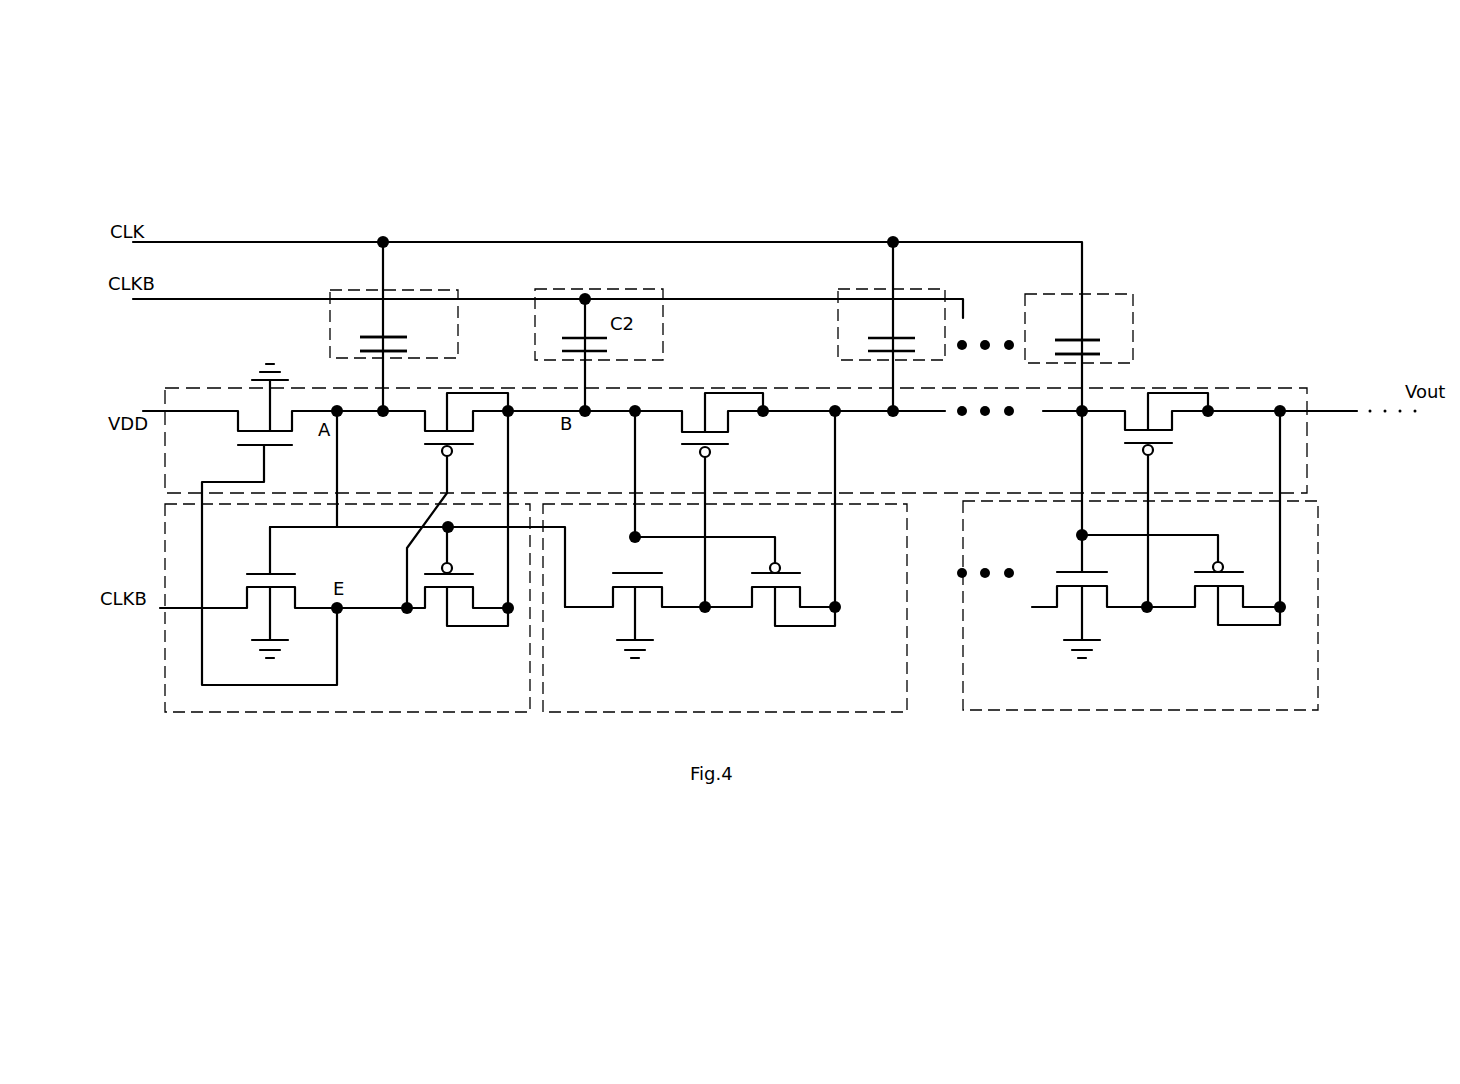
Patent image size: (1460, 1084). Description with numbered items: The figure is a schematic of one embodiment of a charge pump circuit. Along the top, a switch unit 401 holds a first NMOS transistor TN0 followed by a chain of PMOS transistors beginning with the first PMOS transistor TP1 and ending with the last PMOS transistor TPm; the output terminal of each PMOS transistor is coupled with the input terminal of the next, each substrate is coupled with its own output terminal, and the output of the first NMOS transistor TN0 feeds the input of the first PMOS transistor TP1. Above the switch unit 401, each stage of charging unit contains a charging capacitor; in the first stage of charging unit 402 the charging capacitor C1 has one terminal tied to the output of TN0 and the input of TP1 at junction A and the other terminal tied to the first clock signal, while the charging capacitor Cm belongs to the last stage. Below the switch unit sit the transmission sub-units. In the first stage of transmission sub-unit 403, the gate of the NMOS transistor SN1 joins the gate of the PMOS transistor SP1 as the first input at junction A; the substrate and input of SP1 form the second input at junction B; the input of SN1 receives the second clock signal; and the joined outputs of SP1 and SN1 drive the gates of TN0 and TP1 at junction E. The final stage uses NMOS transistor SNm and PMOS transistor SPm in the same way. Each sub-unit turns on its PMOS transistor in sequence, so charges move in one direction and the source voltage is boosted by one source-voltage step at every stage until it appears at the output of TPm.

The switch unit 401 is at (193, 387).
The first stage of charging unit 402 is at (458, 348).
The first stage of transmission sub-unit 403 is at (407, 712).
The charging capacitor C1 is at (392, 331).
The charging capacitor Cm is at (1092, 337).
The first NMOS transistor TN0 is at (238, 434).
The first PMOS transistor TP1 is at (412, 434).
The NMOS transistor SN1 is at (262, 568).
The PMOS transistor SP1 is at (420, 617).
The NMOS transistor SNm is at (1063, 562).
The last PMOS transistor TPm is at (1132, 450).
The PMOS transistor SPm is at (1200, 617).